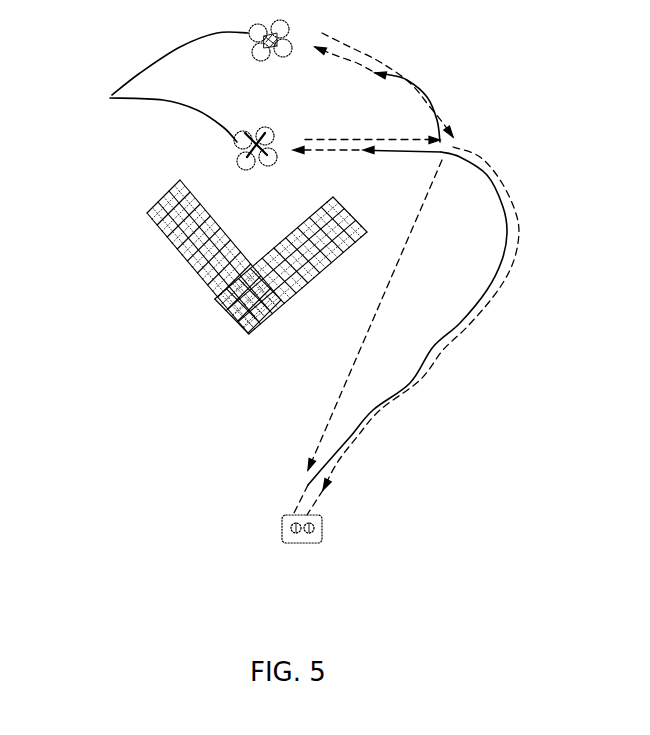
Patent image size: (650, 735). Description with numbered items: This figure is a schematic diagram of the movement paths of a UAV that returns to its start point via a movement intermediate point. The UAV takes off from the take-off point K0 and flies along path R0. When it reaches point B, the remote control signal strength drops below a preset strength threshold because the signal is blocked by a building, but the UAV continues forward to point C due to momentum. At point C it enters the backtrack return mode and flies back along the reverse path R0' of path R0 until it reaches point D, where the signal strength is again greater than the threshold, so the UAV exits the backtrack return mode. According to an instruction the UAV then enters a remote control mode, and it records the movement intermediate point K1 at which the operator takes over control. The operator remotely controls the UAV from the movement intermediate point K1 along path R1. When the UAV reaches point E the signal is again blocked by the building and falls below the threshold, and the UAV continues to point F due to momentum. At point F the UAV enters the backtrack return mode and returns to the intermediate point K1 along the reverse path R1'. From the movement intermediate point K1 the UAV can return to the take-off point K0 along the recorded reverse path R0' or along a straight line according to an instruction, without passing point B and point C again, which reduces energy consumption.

The unmanned aerial vehicle UAV is at (147, 87).
The point F is at (288, 40).
The point C is at (337, 148).
The point E is at (373, 87).
The path R1 is at (377, 94).
The reverse path R'1 R1' is at (387, 85).
The movement intermediate point K1 is at (464, 139).
The point B is at (399, 161).
The point D is at (384, 315).
The path R0 is at (400, 333).
The reverse path R'0 R0' is at (425, 331).
The take-off point K0 is at (296, 509).